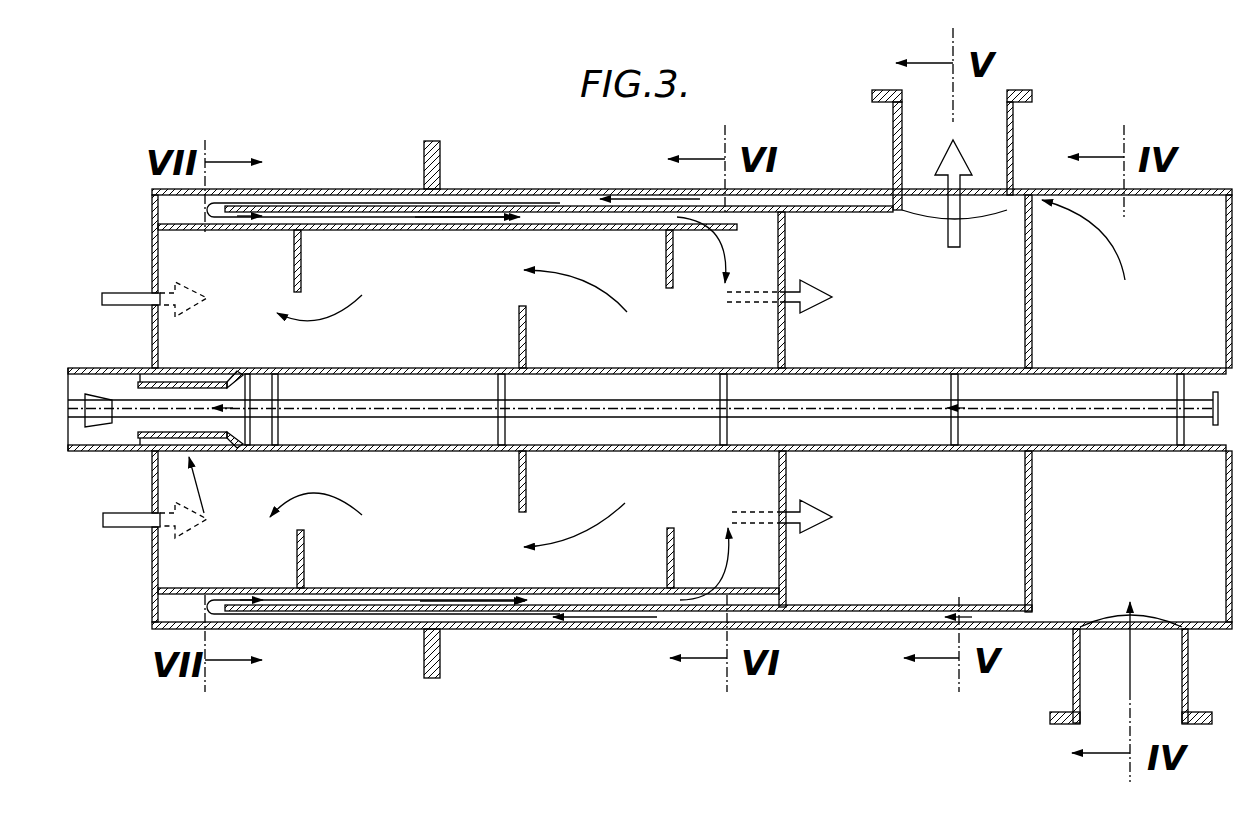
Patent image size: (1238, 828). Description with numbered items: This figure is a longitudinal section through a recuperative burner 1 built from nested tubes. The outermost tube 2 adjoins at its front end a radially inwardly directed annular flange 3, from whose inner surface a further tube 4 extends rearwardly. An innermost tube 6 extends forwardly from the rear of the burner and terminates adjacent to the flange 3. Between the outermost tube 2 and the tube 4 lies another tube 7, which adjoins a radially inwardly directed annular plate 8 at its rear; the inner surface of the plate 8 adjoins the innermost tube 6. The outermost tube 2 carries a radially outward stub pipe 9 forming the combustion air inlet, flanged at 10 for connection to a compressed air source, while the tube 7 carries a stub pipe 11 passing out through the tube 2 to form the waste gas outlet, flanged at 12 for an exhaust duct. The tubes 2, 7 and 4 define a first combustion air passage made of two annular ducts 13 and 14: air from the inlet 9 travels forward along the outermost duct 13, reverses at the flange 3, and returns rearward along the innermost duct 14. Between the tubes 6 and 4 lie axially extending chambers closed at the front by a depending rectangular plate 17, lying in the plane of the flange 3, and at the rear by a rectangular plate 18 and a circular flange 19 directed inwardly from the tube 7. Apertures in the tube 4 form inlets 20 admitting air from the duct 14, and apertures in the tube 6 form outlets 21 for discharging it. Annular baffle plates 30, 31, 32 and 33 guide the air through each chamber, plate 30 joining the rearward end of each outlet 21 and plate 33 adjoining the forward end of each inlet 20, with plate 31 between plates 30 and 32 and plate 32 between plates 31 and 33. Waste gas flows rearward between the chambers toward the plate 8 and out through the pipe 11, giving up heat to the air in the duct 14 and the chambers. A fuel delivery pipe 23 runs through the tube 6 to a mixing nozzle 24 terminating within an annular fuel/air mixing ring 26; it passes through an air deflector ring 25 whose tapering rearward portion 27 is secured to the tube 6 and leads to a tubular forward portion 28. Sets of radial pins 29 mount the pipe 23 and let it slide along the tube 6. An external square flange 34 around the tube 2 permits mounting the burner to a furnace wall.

The burner 1 is at (515, 185).
The outermost tube 2 is at (352, 190).
The annular flange 3 is at (152, 213).
The further tube 4 is at (283, 224).
The innermost tube 6 is at (1086, 368).
The tube 7 is at (458, 206).
The annular plate 8 is at (1032, 262).
The stub pipe 9 is at (1188, 661).
The flange 10 is at (1052, 720).
The stub pipe 11 is at (1013, 128).
The flange 12 is at (1030, 91).
The outermost duct 13 is at (568, 201).
The innermost duct 14 is at (384, 231).
The rectangular plate 17 is at (152, 256).
The rectangular plate 18 is at (786, 346).
The circular flange 19 is at (787, 217).
The inlets 20 is at (740, 228).
The outlets 21 is at (205, 370).
The fuel delivery pipe 23 is at (586, 400).
The mixing nozzle 24 is at (97, 428).
The air deflector ring 25 is at (140, 368).
The fuel/air mixing ring 26 is at (82, 366).
The rearward portion 27 is at (250, 377).
The forward portion 28 is at (178, 440).
The radial pins 29 is at (302, 378).
The baffle plate 30 is at (192, 362).
The baffle plate 31 is at (301, 256).
The baffle plate 32 is at (527, 346).
The baffle plate 33 is at (666, 256).
The square flange 34 is at (438, 143).